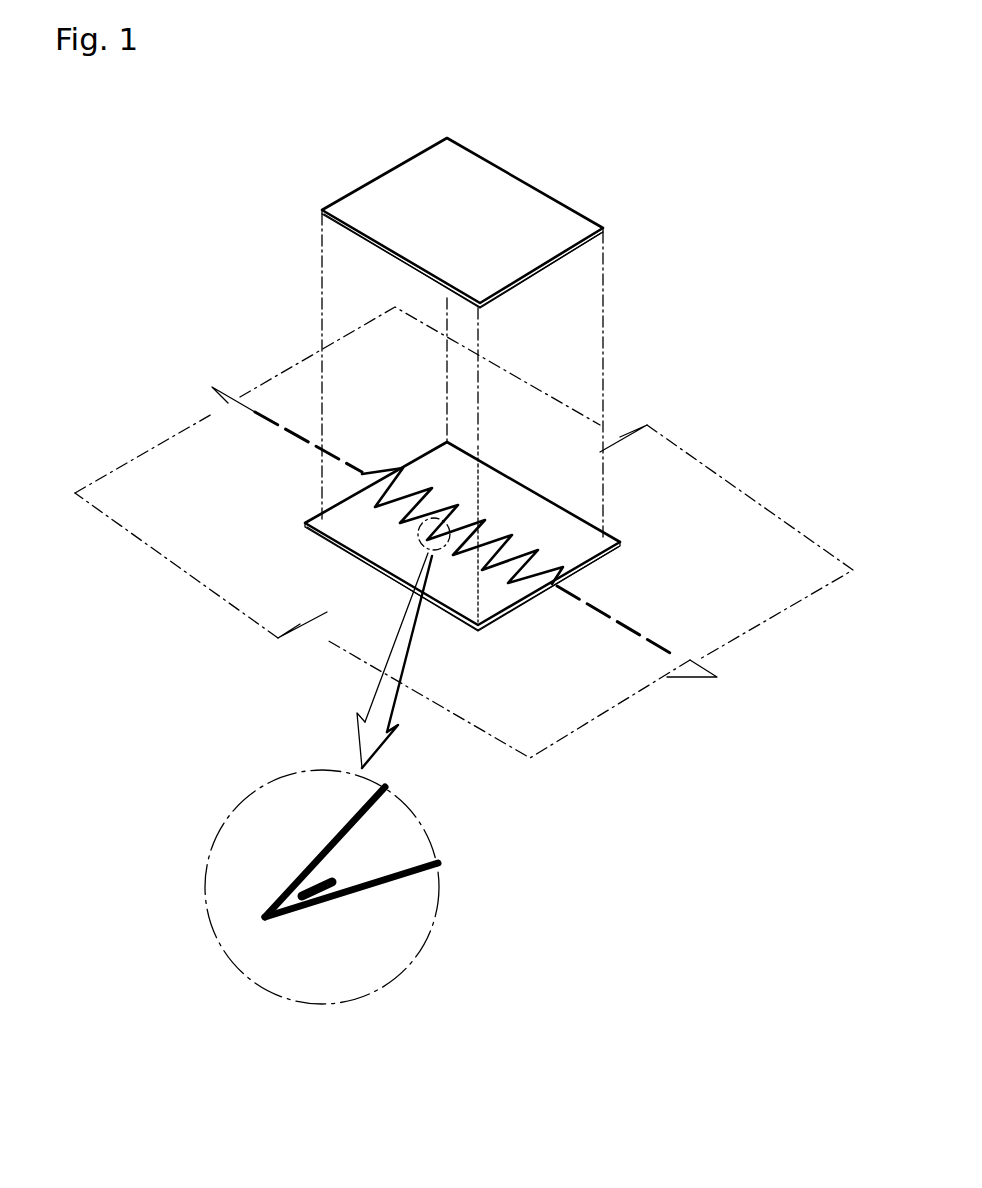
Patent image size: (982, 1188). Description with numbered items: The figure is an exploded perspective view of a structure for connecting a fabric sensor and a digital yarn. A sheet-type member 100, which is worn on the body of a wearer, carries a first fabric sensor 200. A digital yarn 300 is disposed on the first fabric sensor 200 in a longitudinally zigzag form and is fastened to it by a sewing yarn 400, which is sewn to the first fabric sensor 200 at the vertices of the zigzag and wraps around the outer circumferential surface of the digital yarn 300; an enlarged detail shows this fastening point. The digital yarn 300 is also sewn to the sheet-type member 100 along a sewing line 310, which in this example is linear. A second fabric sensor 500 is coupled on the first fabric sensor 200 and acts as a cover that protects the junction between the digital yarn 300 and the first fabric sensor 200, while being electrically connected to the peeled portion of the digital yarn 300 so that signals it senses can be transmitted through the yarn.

The sheet-type member 100 is at (683, 513).
The first fabric sensor 200 is at (493, 598).
The digital yarn 300 is at (540, 582).
The sewing line 310 is at (615, 620).
The sewing yarn 400 is at (268, 910).
The second fabric sensor 500 is at (516, 198).